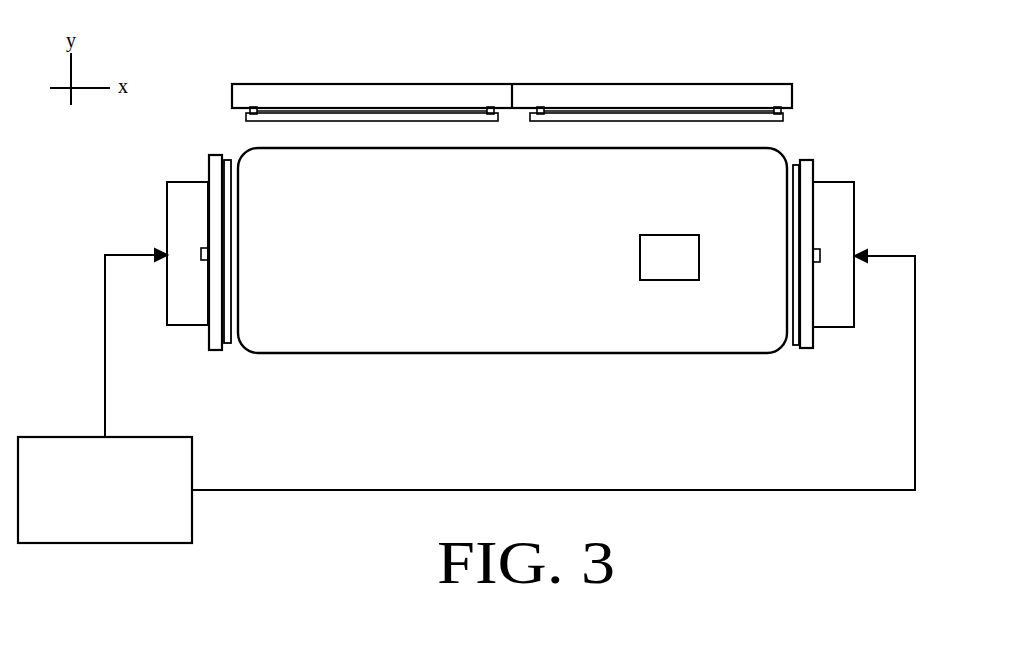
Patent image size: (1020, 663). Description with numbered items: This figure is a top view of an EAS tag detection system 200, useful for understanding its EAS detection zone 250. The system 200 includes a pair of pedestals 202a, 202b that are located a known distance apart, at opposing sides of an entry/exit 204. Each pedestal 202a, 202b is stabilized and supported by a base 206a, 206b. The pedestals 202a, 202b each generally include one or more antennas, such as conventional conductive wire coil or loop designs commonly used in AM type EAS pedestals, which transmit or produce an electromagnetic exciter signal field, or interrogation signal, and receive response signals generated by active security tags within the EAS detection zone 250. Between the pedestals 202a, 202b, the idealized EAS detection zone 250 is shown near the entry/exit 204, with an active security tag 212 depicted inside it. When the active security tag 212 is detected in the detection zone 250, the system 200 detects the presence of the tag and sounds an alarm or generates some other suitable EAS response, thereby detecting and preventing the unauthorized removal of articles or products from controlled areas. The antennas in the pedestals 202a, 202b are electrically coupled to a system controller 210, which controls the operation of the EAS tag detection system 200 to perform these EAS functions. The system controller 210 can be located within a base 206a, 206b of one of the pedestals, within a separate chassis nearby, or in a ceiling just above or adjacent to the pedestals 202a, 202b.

The EAS tag detection system 200 is at (862, 60).
The entry/exit 204 is at (681, 87).
The EAS detection zone 250 is at (552, 354).
The active security tag 212 is at (669, 257).
The base 206a is at (167, 200).
The base 206b is at (818, 180).
The pedestal 202a is at (207, 331).
The pedestal 202b is at (814, 340).
The system controller 210 is at (466, 396).